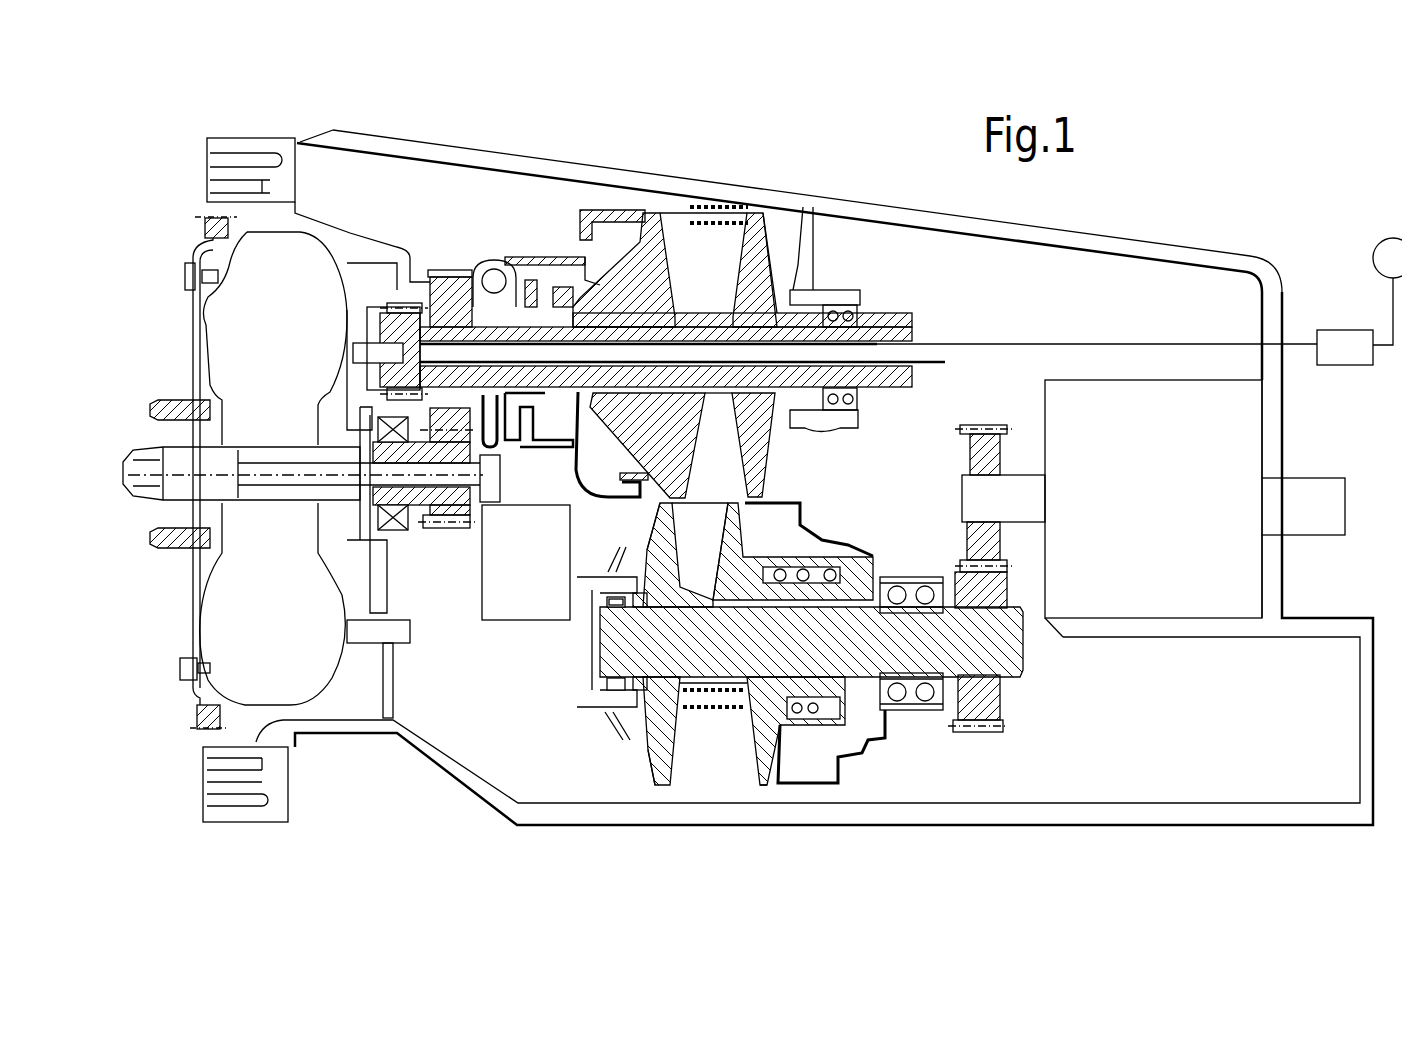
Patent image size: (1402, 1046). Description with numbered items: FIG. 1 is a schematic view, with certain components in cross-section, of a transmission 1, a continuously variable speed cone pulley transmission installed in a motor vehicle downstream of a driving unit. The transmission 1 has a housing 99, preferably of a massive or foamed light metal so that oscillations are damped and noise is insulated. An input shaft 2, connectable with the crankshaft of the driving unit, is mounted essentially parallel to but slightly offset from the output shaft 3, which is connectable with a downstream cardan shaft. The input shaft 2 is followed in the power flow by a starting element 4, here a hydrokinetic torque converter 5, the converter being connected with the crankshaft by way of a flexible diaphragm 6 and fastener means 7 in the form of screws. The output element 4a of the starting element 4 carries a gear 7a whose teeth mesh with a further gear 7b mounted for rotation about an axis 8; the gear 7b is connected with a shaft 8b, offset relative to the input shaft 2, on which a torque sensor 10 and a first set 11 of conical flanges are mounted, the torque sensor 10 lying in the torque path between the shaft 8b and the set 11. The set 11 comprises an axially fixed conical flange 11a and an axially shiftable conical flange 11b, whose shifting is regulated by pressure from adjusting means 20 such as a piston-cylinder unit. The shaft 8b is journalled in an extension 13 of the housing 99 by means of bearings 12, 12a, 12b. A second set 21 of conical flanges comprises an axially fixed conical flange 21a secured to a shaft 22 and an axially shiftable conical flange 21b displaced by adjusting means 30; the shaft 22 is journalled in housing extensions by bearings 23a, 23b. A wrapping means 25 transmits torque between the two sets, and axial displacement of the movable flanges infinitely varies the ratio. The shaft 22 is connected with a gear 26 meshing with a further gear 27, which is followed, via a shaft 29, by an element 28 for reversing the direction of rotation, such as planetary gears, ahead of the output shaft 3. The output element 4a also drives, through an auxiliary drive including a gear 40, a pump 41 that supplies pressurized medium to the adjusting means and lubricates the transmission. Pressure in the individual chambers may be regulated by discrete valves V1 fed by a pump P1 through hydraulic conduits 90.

The transmission 1 is at (880, 185).
The input shaft 2 is at (150, 458).
The output shaft 3 is at (1322, 493).
The starting element 4 is at (286, 334).
The output element 4a is at (437, 505).
The hydrokinetic torque converter 5 is at (197, 707).
The flexible diaphragm 6 is at (193, 320).
The fastener means 7 is at (183, 402).
The gear 7a is at (445, 528).
The gear 7b is at (448, 290).
The axis 8 is at (423, 310).
The shaft 8b is at (925, 345).
The torque sensor 10 is at (507, 240).
The first set of conical flanges 11 is at (703, 160).
The axially fixed conical flange 11a is at (768, 223).
The axially shiftable conical flange 11b is at (652, 235).
The bearing 12 is at (855, 323).
The bearing 12a is at (802, 397).
The bearing 12b is at (398, 303).
The extension of the housing 13 is at (817, 295).
The adjusting means 20 is at (548, 237).
The second set of conical flanges 21 is at (713, 777).
The axially fixed conical flange 21a is at (657, 743).
The axially shiftable conical flange 21b is at (763, 743).
The shaft 22 is at (1015, 655).
The bearing 23a is at (620, 683).
The bearing 23b is at (912, 577).
The wrapping means 25 is at (730, 220).
The gear 26 is at (977, 712).
The gear 27 is at (985, 427).
The direction of rotation reversing element 28 is at (1168, 501).
The shaft 29 is at (1020, 492).
The adjusting means 30 is at (863, 763).
The gear 40 is at (490, 462).
The pump 41 is at (542, 578).
The hydraulic conduits 90 is at (1128, 345).
The housing 99 is at (1078, 245).
The pump P1 is at (1383, 253).
The valves V1 is at (1337, 347).